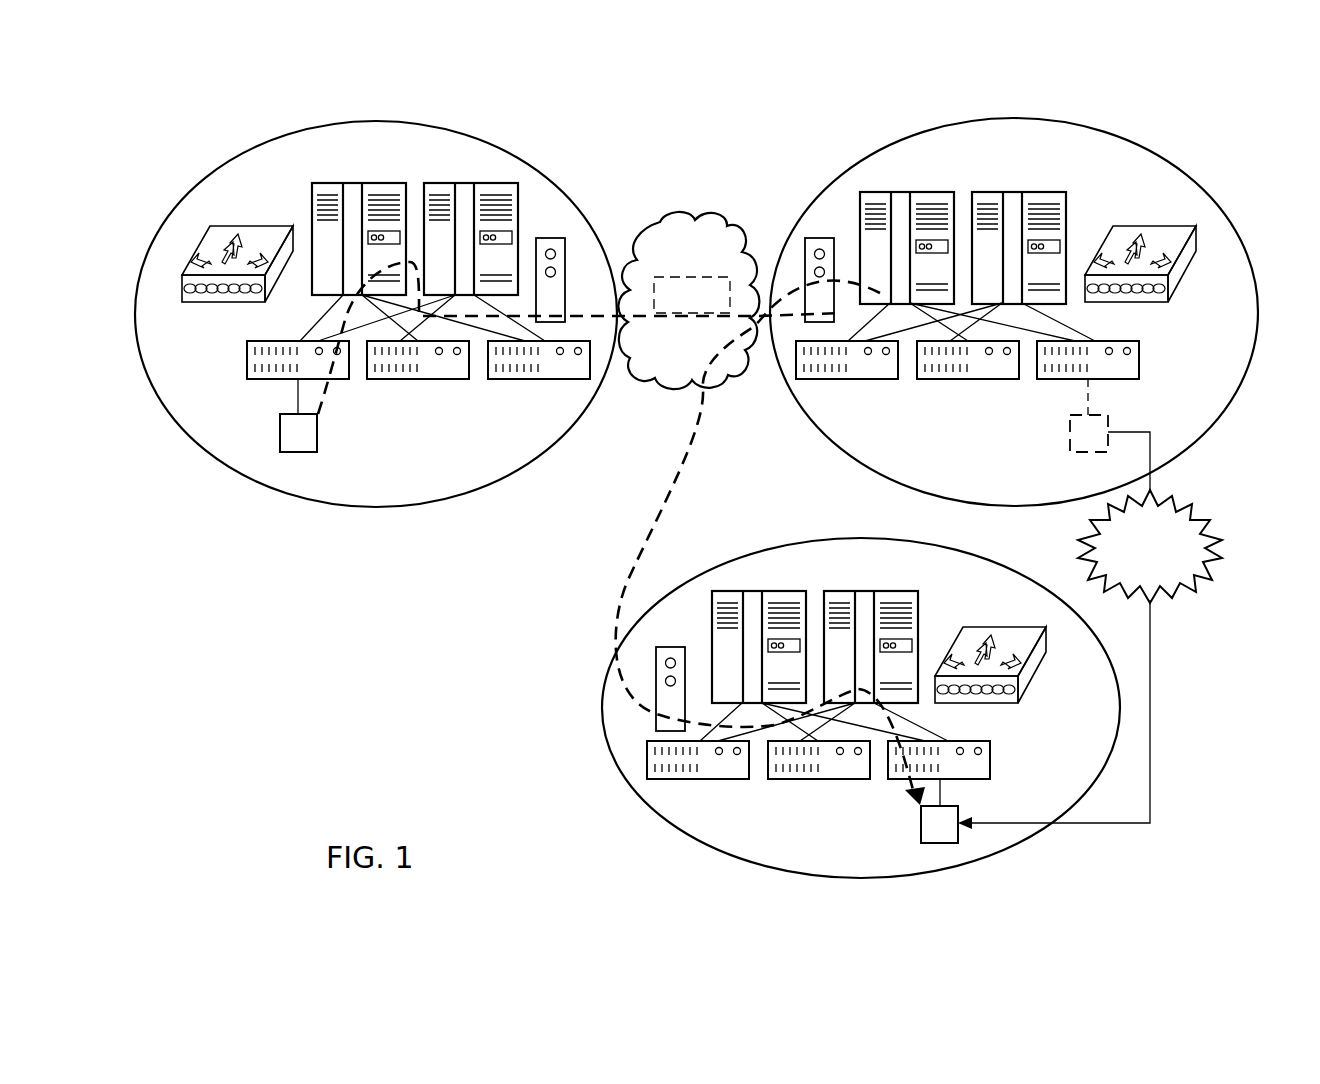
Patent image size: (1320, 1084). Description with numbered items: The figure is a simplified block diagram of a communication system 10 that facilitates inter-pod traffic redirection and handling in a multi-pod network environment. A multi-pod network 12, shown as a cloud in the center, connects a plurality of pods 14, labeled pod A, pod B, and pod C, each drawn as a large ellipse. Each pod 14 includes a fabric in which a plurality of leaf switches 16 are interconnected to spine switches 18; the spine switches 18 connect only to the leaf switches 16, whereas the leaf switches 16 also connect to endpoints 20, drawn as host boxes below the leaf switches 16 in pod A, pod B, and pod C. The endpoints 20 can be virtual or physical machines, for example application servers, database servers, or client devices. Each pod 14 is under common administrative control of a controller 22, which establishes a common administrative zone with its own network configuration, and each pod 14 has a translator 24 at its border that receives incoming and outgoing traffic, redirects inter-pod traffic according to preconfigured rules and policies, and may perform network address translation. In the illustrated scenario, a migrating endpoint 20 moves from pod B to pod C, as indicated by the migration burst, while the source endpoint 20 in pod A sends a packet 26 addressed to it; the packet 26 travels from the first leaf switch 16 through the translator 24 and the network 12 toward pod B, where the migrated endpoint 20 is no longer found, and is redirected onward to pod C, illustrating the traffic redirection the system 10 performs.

The communication system 10 is at (387, 752).
The multi-pod network 12 is at (690, 218).
The pod 14 is at (218, 175).
The leaf switch 16 is at (247, 356).
The spine switch 18 is at (332, 183).
The endpoint 20 is at (280, 430).
The controller 22 is at (196, 303).
The translator 24 is at (668, 647).
The packet 26 is at (694, 313).